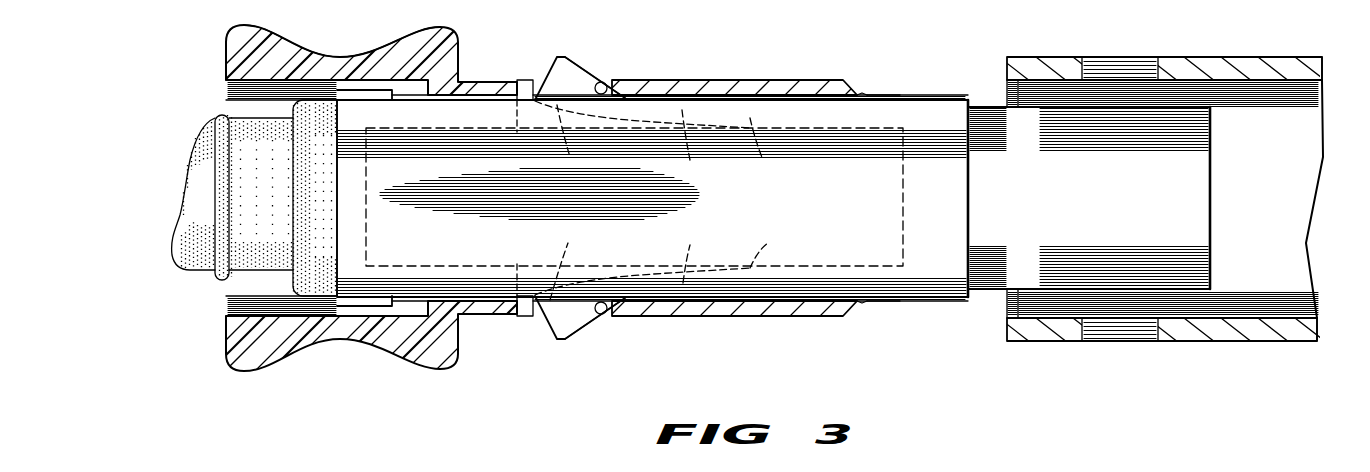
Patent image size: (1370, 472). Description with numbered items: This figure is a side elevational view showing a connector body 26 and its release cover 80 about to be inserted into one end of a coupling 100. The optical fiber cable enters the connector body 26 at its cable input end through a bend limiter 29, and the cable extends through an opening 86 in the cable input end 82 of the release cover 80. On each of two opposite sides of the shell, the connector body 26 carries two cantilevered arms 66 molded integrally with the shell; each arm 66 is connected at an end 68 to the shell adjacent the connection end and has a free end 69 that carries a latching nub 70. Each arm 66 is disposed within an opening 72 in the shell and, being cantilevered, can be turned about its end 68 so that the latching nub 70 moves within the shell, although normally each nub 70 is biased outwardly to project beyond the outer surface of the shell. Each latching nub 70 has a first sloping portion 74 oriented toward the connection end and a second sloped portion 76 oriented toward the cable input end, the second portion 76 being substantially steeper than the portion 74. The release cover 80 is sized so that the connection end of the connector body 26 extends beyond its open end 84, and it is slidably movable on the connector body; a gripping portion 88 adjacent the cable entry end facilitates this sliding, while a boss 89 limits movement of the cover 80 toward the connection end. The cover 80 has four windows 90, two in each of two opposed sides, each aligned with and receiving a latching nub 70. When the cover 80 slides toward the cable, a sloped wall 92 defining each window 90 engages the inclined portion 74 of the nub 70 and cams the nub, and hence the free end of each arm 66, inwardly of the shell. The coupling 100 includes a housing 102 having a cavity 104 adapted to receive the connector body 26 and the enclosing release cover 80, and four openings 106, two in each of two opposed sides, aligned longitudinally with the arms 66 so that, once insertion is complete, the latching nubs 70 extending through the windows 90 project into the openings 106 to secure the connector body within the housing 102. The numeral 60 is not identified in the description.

The connector body 26 is at (937, 101).
The bend limiter 29 is at (188, 160).
The stem 60 is at (1203, 204).
The cantilevered arm 66 is at (685, 196).
The end of cantilevered arm 68 is at (772, 193).
The free end of cantilevered arm 69 is at (642, 200).
The latching nub 70 is at (565, 73).
The opening in shell 72 is at (524, 116).
The first sloping portion 74 is at (597, 85).
The second sloped portion 76 is at (547, 78).
The release cover 80 is at (738, 80).
The cable input end of release cover 82 is at (228, 50).
The open end of release cover 84 is at (862, 93).
The opening in cable input end 86 is at (236, 90).
The gripping portion 88 is at (283, 53).
The boss 89 is at (883, 97).
The window 90 is at (527, 82).
The sloped wall 92 is at (602, 83).
The coupling 100 is at (1216, 56).
The housing 102 is at (1292, 65).
The cavity 104 is at (1310, 170).
The opening in housing 106 is at (1127, 62).